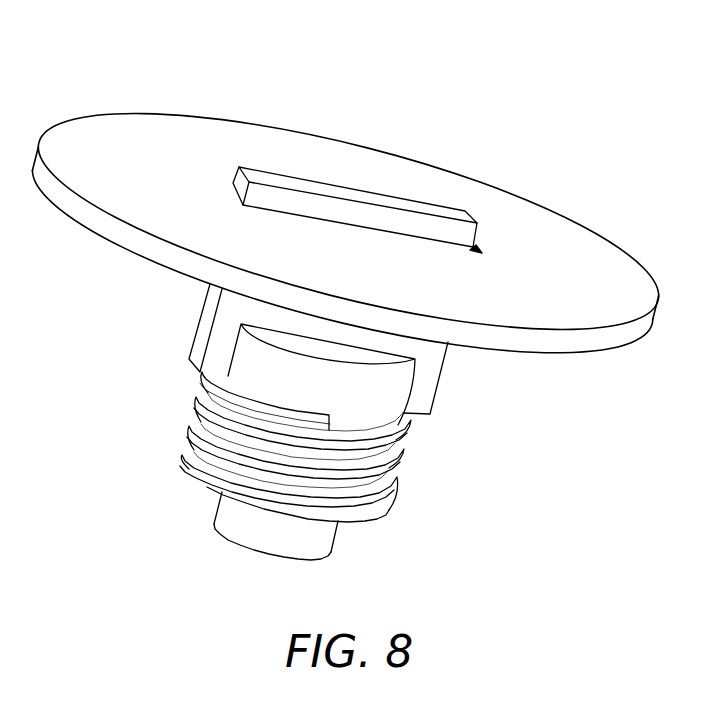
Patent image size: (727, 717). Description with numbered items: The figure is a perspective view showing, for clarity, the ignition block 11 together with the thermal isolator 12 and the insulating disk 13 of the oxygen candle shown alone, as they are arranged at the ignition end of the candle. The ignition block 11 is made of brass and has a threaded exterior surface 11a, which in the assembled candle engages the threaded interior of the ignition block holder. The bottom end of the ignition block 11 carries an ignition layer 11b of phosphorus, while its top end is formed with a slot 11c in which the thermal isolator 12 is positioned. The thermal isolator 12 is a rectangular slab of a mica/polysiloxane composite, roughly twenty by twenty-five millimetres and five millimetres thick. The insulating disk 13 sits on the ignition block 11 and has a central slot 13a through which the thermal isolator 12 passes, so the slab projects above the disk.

The ignition block 11 is at (338, 444).
The threaded exterior surface 11a is at (402, 495).
The ignition layer 11b is at (268, 544).
The slot 11c is at (410, 387).
The thermal isolator 12 is at (367, 195).
The insulating disk 13 is at (583, 232).
The central slot 13a is at (228, 186).